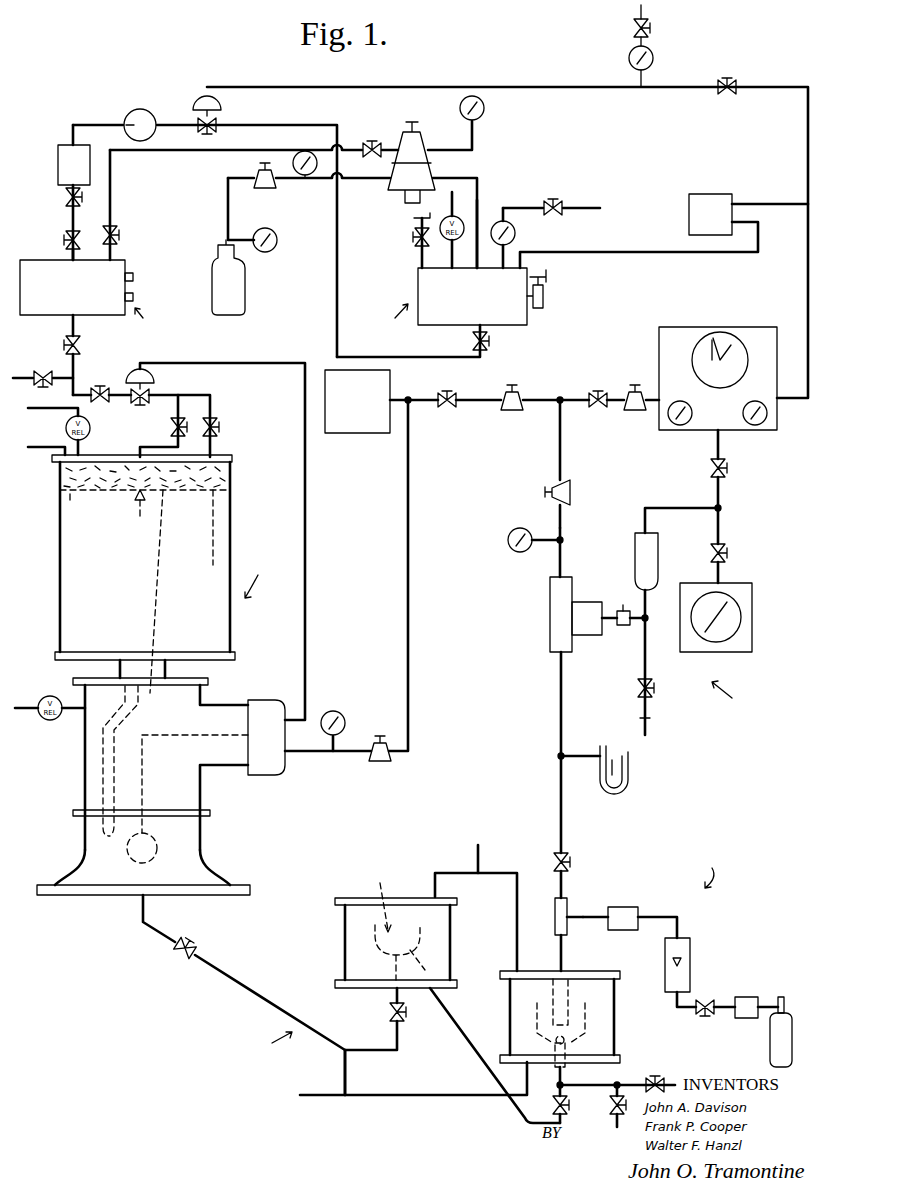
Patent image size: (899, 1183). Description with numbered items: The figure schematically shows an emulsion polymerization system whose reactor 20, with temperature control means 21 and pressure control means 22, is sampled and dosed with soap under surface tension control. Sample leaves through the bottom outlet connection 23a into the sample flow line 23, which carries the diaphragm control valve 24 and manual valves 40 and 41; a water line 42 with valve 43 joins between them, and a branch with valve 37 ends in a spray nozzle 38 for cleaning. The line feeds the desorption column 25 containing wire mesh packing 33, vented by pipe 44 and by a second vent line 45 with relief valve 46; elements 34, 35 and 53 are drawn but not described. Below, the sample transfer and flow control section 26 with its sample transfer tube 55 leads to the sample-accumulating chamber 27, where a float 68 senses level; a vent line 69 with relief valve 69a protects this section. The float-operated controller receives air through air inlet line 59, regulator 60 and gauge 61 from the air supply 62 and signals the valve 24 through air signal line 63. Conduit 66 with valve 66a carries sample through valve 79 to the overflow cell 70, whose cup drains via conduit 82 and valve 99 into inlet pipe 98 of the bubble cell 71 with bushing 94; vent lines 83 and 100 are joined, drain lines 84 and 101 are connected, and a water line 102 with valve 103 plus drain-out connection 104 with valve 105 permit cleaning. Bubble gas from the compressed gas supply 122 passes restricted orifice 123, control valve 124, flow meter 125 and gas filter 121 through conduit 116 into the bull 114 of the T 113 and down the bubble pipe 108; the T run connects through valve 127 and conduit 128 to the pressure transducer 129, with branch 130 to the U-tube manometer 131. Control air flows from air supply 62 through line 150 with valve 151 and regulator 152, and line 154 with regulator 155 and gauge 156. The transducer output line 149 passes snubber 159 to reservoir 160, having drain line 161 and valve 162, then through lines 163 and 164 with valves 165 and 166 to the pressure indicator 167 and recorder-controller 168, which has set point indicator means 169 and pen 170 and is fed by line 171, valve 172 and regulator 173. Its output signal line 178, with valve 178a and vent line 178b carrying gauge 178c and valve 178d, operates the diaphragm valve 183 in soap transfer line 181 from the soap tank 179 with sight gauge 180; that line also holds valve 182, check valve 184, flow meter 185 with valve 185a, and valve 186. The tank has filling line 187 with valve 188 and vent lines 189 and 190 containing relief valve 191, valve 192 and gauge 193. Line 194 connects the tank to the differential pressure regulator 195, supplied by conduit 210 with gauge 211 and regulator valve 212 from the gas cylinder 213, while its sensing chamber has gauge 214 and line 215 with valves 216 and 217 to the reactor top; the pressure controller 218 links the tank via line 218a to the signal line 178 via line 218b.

The reactor 20 is at (125, 262).
The temperature control means 21 is at (135, 278).
The pressure control means 22 is at (135, 298).
The sample flow line 23 is at (211, 393).
The reactor bottom outlet connection 23a is at (75, 327).
The control valve 24 is at (152, 383).
The desorption column 25 is at (60, 586).
The sample transfer and flow control section 26 is at (80, 756).
The sample-accumulating chamber 27 is at (73, 861).
The wire mesh packing 33 is at (65, 482).
The probe 34 is at (215, 510).
The valve 35 is at (220, 433).
The valve 37 is at (170, 425).
The spray nozzle 38 is at (131, 510).
The manually operable valve 40 is at (82, 345).
The manually operable valve 41 is at (103, 386).
The water line 42 is at (66, 376).
The valve 43 is at (43, 392).
The vent pipe 44 is at (42, 449).
The second vent line 45 is at (70, 500).
The relief valve 46 is at (64, 428).
The dip tube 53 is at (158, 587).
The sample transfer tube 55 is at (148, 715).
The air inlet line 59 is at (405, 541).
The filter-equipped pressure regulator 60 is at (383, 761).
The pressure gauge 61 is at (340, 714).
The air supply 62 is at (353, 425).
The air signal line 63 is at (308, 600).
The conduit 66 is at (143, 924).
The manually operable valve 66a is at (183, 955).
The float 68 is at (158, 848).
The vent line 69 is at (37, 712).
The pressure relief valve 69a is at (52, 696).
The overflow cell 70 is at (382, 900).
The bubble cell 71 is at (524, 1008).
The valve 79 is at (403, 1022).
The conduit 82 is at (478, 1055).
The vent line 83 is at (436, 880).
The drain line 84 is at (345, 1070).
The bushing 94 is at (568, 1067).
The inlet pipe 98 is at (558, 1079).
The manually operable valve 99 is at (552, 1105).
The vent line 100 is at (517, 906).
The drain line 101 is at (425, 1098).
The water line 102 is at (608, 1105).
The manually operable valve 103 is at (663, 1073).
The drain-out connection 104 is at (613, 1126).
The valve 105 is at (612, 1118).
The bubble pipe 108 is at (560, 950).
The T member 113 is at (555, 925).
The bull of T 114 is at (571, 912).
The conduit 116 is at (592, 920).
The wire screen gas filter 121 is at (631, 907).
The regulated compressed gas supply 122 is at (786, 1000).
The restricted orifice 123 is at (755, 997).
The control valve 124 is at (707, 998).
The flow meter 125 is at (695, 946).
The manually operable valve 127 is at (570, 858).
The conduit 128 is at (561, 790).
The pressure transducer 129 is at (547, 611).
The branch 130 is at (598, 748).
The U-tube manometer 131 is at (630, 778).
The output signal line 149 is at (621, 626).
The control air line 150 is at (478, 398).
The valve 151 is at (448, 402).
The filter-equipped pressure regulator 152 is at (521, 391).
The line 154 is at (563, 518).
The pressure regulator 155 is at (572, 490).
The pressure gauge 156 is at (519, 552).
The snubber 159 is at (623, 605).
The air-filled reservoir 160 is at (635, 550).
The drain-out line 161 is at (650, 718).
The valve 162 is at (658, 690).
The line 163 is at (720, 520).
The line 164 is at (715, 494).
The valve 165 is at (728, 560).
The valve 166 is at (728, 470).
The pressure indicator 167 is at (752, 617).
The pressure recorder-controller 168 is at (686, 327).
The set point indicator means 169 is at (735, 330).
The pen 170 is at (705, 350).
The line 171 is at (607, 392).
The valve 172 is at (601, 408).
The regulator 173 is at (634, 410).
The output signal line 178 is at (457, 87).
The manually operable valve 178a is at (729, 95).
The branched vent line 178b is at (648, 45).
The indicating pressure gauge 178c is at (629, 58).
The manually operable valve 178d is at (651, 26).
The soap tank 179 is at (518, 325).
The liquid level sight gauge 180 is at (548, 292).
The soap transfer line 181 is at (68, 257).
The manually operable valve 182 is at (472, 340).
The diaphragm valve 183 is at (222, 122).
The check valve 184 is at (152, 116).
The flow meter 185 is at (62, 145).
The valve 185a is at (65, 198).
The manually operable valve 186 is at (66, 238).
The filling line 187 is at (411, 219).
The valve 188 is at (413, 243).
The vent line 189 is at (438, 230).
The vent line 190 is at (525, 206).
The pressure relief valve 191 is at (450, 241).
The valve 192 is at (560, 204).
The indicating pressure gauge 193 is at (516, 233).
The line 194 is at (479, 198).
The differential pressure regulator 195 is at (448, 172).
The conduit 210 is at (224, 178).
The pressure gauge 211 is at (300, 154).
The regulator valve 212 is at (268, 190).
The gas cylinder 213 is at (238, 276).
The pressure gauge 214 is at (485, 108).
The line 215 is at (206, 150).
The valve 216 is at (378, 143).
The valve 217 is at (121, 228).
The pressure controller 218 is at (714, 193).
The line 218a is at (631, 253).
The line 218b is at (788, 195).